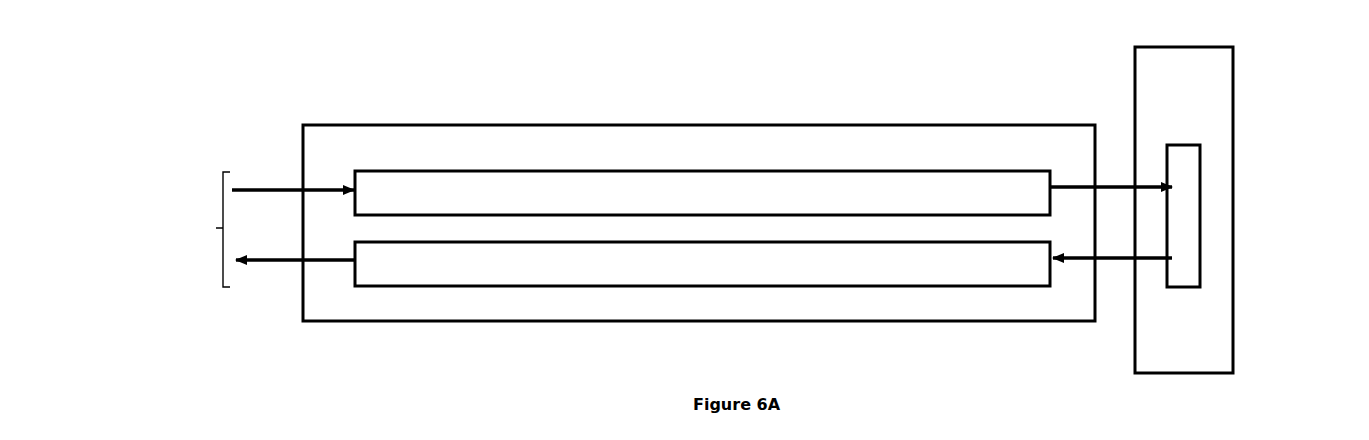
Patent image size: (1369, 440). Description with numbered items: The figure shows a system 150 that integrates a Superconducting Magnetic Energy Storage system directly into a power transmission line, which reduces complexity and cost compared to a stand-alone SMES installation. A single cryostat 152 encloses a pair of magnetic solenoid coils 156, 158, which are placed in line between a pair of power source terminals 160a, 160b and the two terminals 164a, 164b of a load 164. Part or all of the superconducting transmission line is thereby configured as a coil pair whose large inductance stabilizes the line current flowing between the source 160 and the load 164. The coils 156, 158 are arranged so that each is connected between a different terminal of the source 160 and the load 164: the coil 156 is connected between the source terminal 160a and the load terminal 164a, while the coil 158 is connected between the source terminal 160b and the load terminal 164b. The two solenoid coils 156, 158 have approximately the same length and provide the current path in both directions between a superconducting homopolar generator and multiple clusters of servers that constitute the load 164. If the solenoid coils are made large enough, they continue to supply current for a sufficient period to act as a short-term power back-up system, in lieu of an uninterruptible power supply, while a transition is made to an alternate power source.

The system 150 is at (327, 39).
The cryostat 152 is at (843, 122).
The magnetic solenoid coil 156 is at (680, 187).
The magnetic solenoid coil 158 is at (570, 260).
The source 160 is at (206, 229).
The power source terminal 160a is at (256, 183).
The power source terminal 160b is at (290, 263).
The load 164 is at (1236, 127).
The load terminal 164a is at (1163, 184).
The load terminal 164b is at (1167, 262).